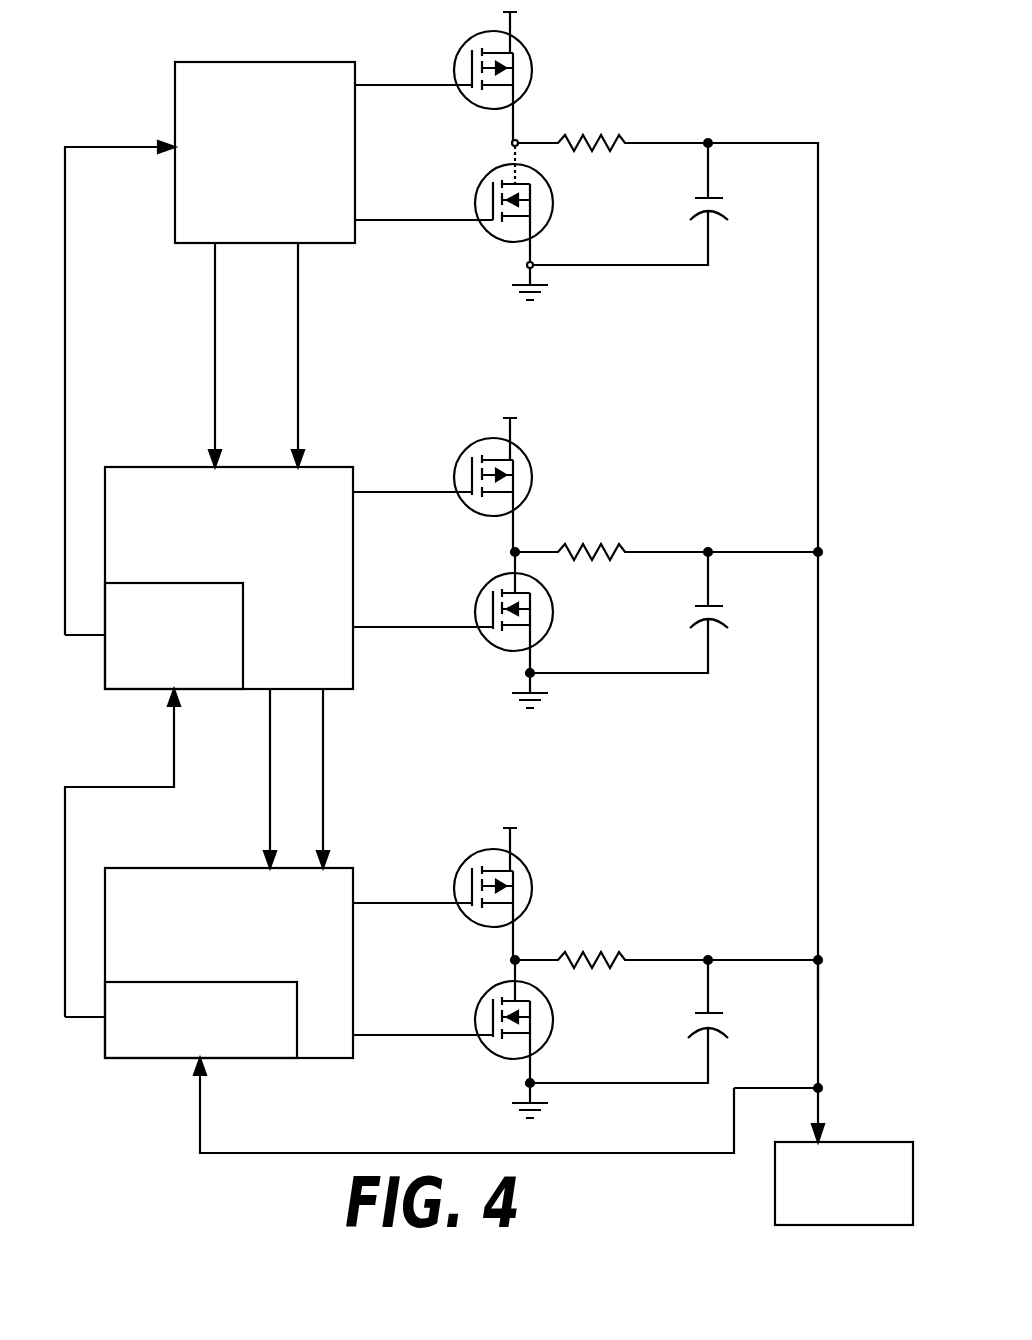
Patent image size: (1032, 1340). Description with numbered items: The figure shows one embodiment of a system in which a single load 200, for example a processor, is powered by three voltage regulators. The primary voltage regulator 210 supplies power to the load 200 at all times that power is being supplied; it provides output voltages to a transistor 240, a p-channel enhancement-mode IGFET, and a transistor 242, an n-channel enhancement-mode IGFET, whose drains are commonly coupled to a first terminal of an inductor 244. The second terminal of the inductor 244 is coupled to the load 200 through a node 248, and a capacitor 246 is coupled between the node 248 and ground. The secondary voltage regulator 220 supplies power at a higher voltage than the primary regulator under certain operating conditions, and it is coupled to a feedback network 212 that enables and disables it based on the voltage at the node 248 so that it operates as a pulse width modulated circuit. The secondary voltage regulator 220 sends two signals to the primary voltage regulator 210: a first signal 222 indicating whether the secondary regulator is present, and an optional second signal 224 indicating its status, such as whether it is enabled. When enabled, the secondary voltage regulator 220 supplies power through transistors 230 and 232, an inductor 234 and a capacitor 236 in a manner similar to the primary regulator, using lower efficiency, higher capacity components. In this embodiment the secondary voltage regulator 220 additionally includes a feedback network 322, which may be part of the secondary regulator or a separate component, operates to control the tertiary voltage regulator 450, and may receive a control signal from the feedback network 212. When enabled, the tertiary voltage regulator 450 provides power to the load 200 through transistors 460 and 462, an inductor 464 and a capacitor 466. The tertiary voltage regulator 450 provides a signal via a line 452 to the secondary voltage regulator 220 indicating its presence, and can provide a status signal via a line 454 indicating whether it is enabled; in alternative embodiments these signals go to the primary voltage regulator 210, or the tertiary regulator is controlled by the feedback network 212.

The load 200 is at (860, 1211).
The primary voltage regulator 210 is at (340, 939).
The feedback network 212 is at (287, 1034).
The secondary voltage regulator 220 is at (339, 542).
The first signal 222 is at (270, 773).
The second signal 224 is at (323, 773).
The transistor 230 is at (533, 475).
The transistor 232 is at (553, 610).
The inductor 234 is at (619, 537).
The capacitor 236 is at (733, 622).
The transistor 240 is at (533, 885).
The transistor 242 is at (552, 1020).
The inductor 244 is at (618, 945).
The capacitor 246 is at (730, 1028).
The node 248 is at (810, 955).
The feedback network 322 is at (190, 676).
The tertiary voltage regulator 450 is at (343, 231).
The line 452 is at (215, 352).
The line 454 is at (298, 352).
The transistor 460 is at (533, 68).
The transistor 462 is at (553, 200).
The inductor 464 is at (619, 127).
The capacitor 466 is at (733, 213).